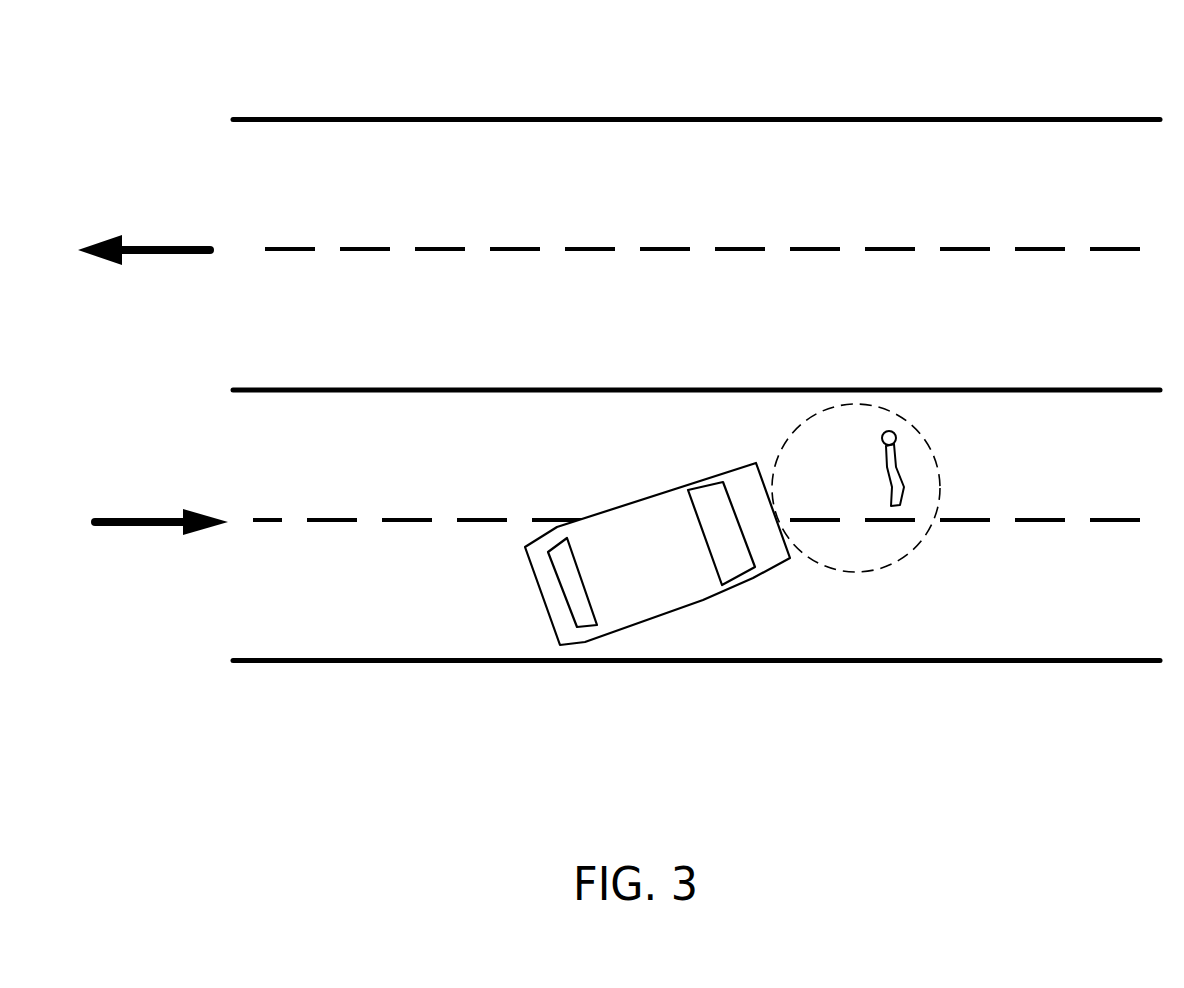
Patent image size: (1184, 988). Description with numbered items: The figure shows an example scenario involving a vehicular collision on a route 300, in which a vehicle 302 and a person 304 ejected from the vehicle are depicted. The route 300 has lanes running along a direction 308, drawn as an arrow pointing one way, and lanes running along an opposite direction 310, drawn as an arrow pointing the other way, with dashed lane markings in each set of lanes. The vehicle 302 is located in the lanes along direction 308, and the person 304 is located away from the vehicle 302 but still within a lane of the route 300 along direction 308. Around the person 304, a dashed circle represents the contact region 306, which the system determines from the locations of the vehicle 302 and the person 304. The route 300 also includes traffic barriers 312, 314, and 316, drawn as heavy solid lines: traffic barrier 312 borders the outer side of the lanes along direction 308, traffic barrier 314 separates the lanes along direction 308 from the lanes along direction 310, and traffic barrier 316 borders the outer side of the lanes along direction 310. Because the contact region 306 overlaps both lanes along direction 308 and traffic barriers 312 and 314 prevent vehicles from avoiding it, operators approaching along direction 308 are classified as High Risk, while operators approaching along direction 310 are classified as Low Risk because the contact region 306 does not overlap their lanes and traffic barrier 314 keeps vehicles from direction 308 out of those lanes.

The route 300 is at (1026, 63).
The vehicle 302 is at (707, 472).
The person 304 is at (888, 468).
The contact region 306 is at (938, 477).
The direction 308 is at (187, 508).
The direction 310 is at (192, 247).
The traffic barrier 312 is at (392, 658).
The traffic barrier 314 is at (392, 388).
The traffic barrier 316 is at (392, 117).